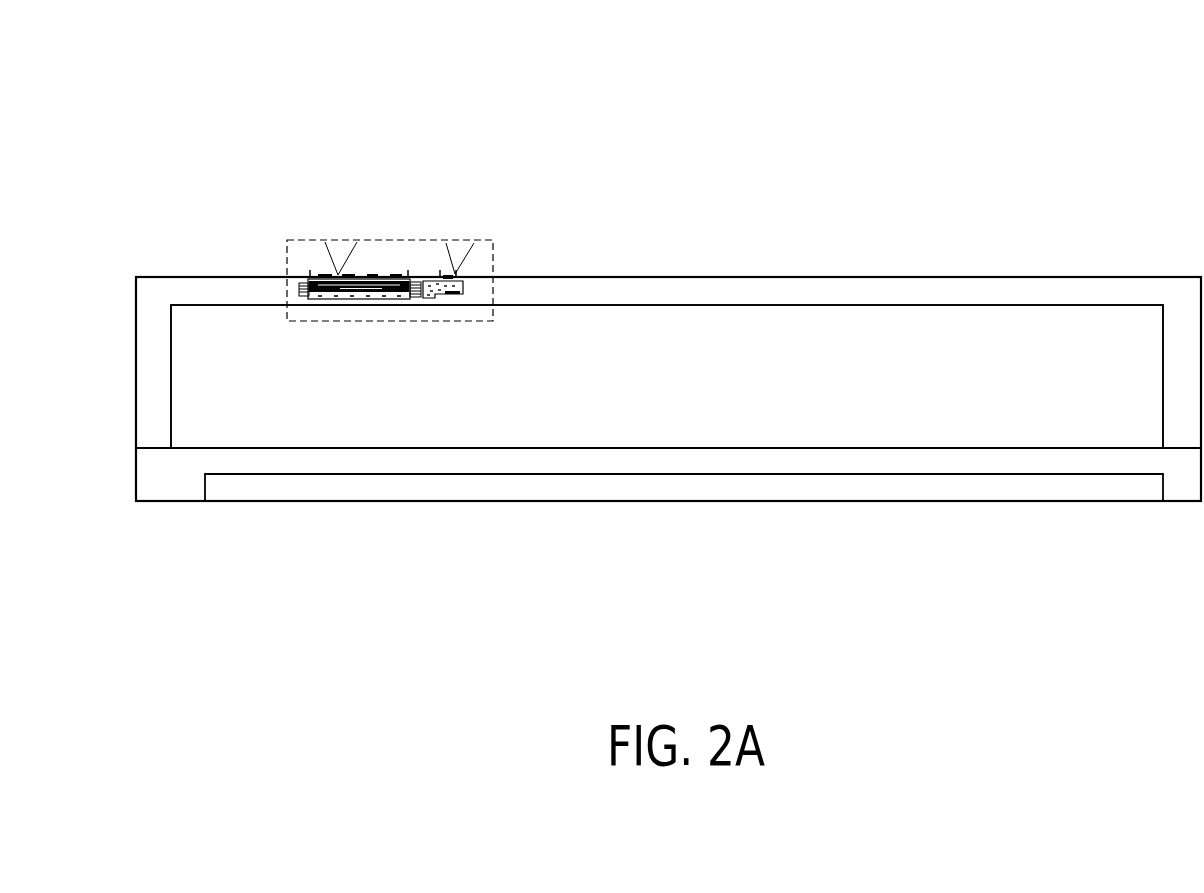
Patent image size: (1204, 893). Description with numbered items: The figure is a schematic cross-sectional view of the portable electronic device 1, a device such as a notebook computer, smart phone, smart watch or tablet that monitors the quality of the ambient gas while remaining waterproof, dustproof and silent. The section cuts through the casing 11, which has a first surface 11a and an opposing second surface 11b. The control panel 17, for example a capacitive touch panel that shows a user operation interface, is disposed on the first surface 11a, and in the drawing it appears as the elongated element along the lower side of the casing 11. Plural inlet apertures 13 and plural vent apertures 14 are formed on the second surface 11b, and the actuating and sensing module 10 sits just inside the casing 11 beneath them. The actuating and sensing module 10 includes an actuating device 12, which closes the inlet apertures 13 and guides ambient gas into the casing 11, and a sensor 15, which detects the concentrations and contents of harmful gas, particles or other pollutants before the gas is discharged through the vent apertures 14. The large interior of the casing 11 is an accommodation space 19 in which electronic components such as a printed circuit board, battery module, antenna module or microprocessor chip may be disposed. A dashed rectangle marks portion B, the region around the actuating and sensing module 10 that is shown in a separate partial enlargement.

The portable electronic device 1 is at (1203, 93).
The actuating and sensing module 10 is at (438, 144).
The casing 11 is at (795, 288).
The first surface 11a is at (164, 502).
The second surface 11b is at (175, 277).
The actuating device 12 is at (382, 277).
The inlet aperture 13 is at (338, 275).
The vent aperture 14 is at (457, 275).
The sensor 15 is at (430, 277).
The control panel 17 is at (322, 489).
The accommodation space 19 is at (677, 368).
The portion B is at (493, 240).